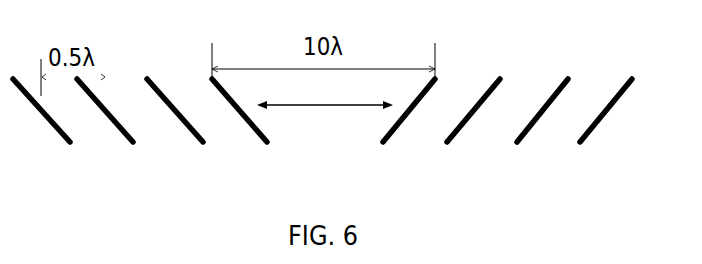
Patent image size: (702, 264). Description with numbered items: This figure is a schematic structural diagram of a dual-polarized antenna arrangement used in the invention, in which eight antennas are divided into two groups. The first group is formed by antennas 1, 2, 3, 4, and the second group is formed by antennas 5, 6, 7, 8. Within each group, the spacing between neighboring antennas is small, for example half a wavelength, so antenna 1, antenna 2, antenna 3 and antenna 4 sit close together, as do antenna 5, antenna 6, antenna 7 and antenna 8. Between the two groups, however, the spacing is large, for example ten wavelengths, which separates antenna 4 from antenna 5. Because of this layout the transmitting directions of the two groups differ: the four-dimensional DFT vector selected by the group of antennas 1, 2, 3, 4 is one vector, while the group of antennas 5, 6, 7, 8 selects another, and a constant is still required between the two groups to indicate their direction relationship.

The antenna 1 is at (50, 123).
The antenna 2 is at (108, 123).
The antenna 3 is at (175, 123).
The antenna 4 is at (239, 123).
The antenna 5 is at (409, 123).
The antenna 6 is at (471, 123).
The antenna 7 is at (532, 123).
The antenna 8 is at (592, 123).